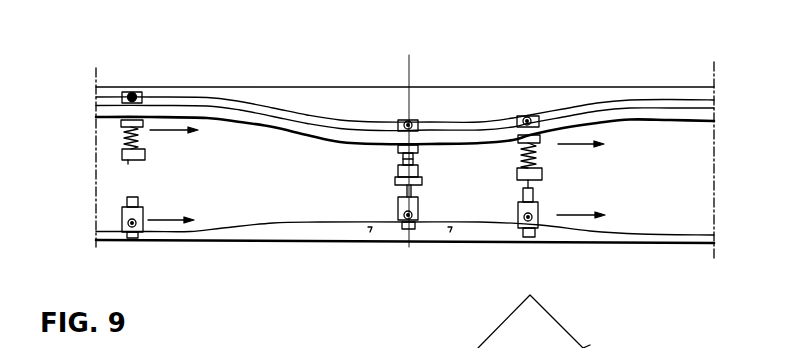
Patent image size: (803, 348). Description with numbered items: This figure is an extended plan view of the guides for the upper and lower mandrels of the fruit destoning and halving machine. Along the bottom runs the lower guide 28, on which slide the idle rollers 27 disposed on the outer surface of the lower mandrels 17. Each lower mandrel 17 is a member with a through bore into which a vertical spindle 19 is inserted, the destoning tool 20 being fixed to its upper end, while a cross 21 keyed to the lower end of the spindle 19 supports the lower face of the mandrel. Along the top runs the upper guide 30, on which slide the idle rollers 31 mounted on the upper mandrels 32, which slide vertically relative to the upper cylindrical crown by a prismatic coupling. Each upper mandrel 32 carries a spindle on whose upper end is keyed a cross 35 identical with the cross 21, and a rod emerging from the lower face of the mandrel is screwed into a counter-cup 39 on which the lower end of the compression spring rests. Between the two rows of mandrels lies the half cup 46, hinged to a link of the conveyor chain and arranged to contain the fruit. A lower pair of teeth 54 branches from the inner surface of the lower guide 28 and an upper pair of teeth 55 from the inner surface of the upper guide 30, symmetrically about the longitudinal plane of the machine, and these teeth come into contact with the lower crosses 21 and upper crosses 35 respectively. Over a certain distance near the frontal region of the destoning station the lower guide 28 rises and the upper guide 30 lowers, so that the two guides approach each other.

The lower mandrel 17 is at (118, 235).
The vertical spindle 19 is at (122, 207).
The destoning tool 20 is at (130, 197).
The cross 21 is at (138, 241).
The idle rollers 27 is at (418, 216).
The lower guide 28 is at (672, 244).
The upper guide 30 is at (688, 97).
The idle rollers 31 is at (127, 95).
The upper mandrel 32 is at (118, 147).
The cross 35 is at (141, 91).
The counter-cup 39 is at (127, 160).
The half cup 46 is at (396, 185).
The lower pair of teeth 54 is at (370, 232).
The upper pair of teeth 55 is at (370, 118).